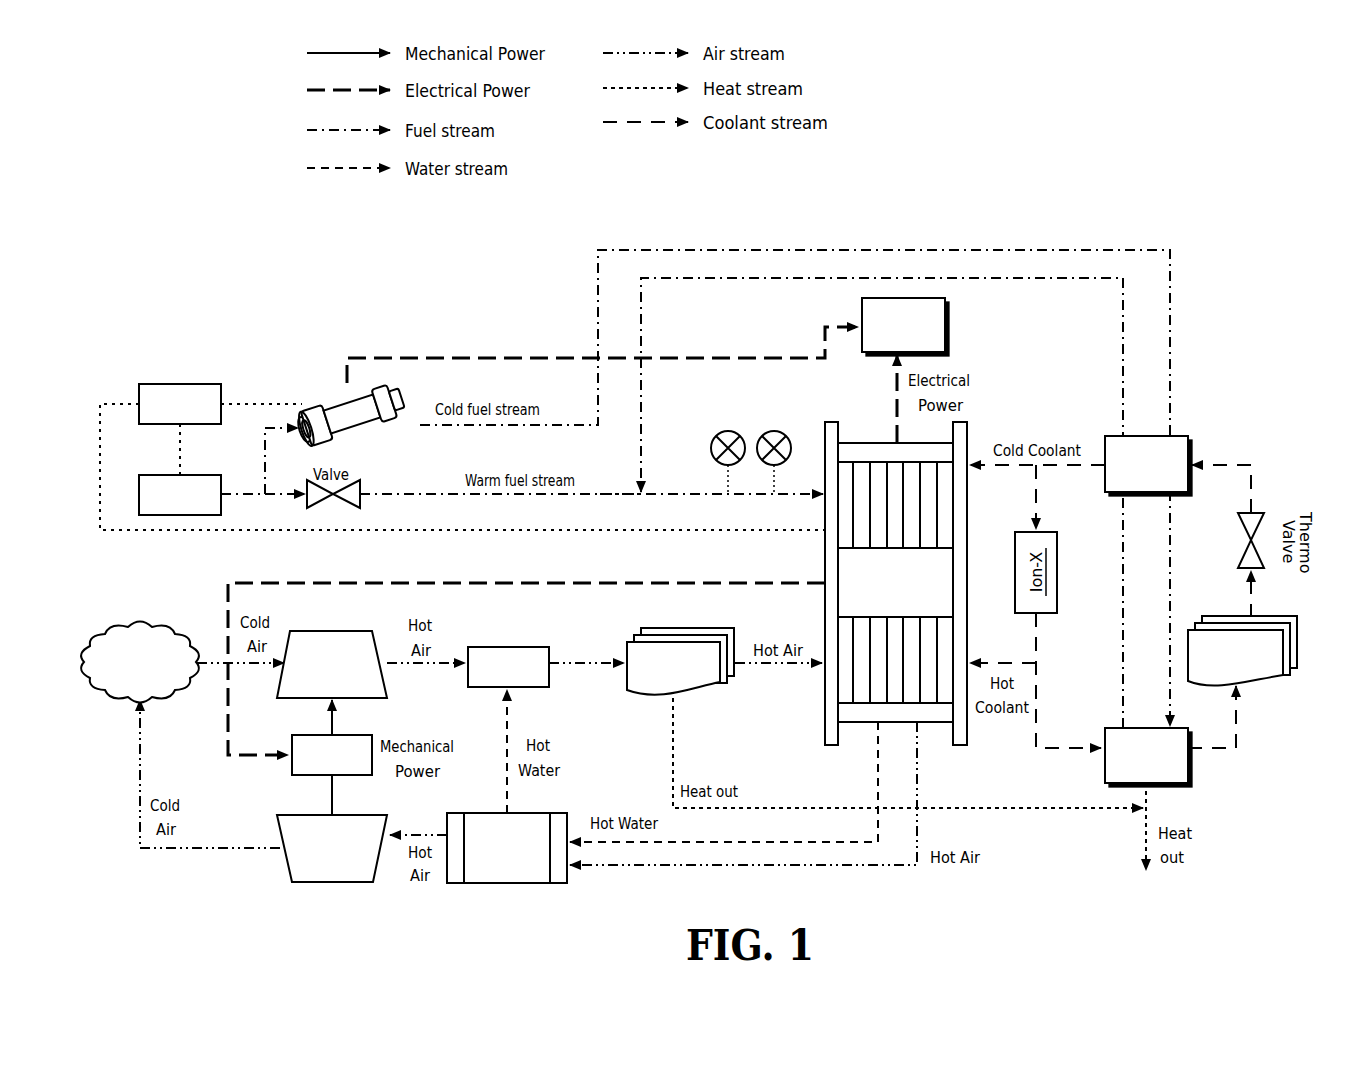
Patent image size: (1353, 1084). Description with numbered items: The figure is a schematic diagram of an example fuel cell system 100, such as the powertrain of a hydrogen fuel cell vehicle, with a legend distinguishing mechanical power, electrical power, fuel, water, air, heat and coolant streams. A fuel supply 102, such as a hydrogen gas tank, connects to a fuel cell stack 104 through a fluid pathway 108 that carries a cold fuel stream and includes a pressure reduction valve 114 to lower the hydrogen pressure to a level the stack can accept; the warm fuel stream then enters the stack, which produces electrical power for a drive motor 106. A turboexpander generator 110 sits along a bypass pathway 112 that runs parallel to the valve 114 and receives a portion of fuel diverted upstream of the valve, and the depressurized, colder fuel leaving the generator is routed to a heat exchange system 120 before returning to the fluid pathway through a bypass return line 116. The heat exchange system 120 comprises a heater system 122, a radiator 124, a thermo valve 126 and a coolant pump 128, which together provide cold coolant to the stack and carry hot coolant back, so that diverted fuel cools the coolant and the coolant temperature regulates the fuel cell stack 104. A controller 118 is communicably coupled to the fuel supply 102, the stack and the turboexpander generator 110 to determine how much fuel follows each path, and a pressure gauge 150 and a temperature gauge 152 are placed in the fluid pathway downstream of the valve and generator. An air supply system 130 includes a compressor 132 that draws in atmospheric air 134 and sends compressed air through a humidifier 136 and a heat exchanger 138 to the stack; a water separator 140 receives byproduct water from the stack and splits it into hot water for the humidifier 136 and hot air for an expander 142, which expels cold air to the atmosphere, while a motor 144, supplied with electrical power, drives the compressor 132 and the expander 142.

The fuel cell system 100 is at (198, 240).
The fuel supply 102 is at (159, 510).
The fuel cell stack 104 is at (876, 598).
The drive motor 106 is at (882, 340).
The fluid pathway 108 is at (600, 497).
The turboexpander generator 110 is at (343, 400).
The bypass pathway 112 is at (598, 297).
The valve 114 is at (360, 490).
The bypass return line 116 is at (641, 340).
The controller 118 is at (159, 419).
The heat exchange system 120 is at (1237, 390).
The heater system 122 is at (1125, 770).
The radiator 124 is at (1211, 669).
The thermo valve 126 is at (1253, 513).
The coolant pump 128 is at (1125, 479).
The air supply system 130 is at (194, 592).
The compressor 132 is at (310, 679).
The atmospheric air 134 is at (119, 677).
The humidifier 136 is at (487, 682).
The heat exchanger 138 is at (651, 678).
The water separator 140 is at (486, 863).
The expander 142 is at (311, 863).
The motor 144 is at (311, 770).
The pressure gauge 150 is at (716, 436).
The temperature gauge 152 is at (780, 436).